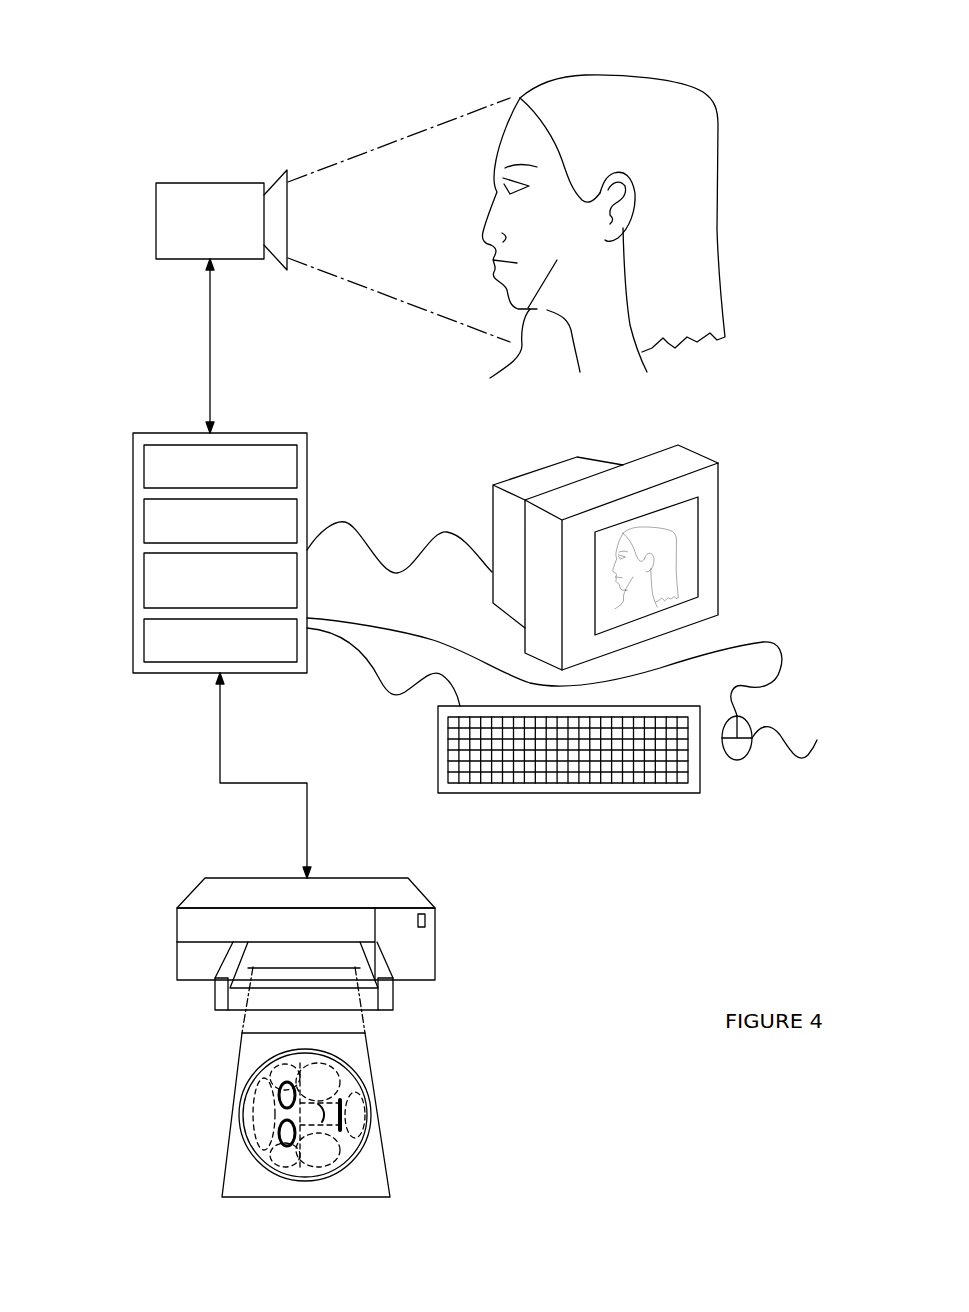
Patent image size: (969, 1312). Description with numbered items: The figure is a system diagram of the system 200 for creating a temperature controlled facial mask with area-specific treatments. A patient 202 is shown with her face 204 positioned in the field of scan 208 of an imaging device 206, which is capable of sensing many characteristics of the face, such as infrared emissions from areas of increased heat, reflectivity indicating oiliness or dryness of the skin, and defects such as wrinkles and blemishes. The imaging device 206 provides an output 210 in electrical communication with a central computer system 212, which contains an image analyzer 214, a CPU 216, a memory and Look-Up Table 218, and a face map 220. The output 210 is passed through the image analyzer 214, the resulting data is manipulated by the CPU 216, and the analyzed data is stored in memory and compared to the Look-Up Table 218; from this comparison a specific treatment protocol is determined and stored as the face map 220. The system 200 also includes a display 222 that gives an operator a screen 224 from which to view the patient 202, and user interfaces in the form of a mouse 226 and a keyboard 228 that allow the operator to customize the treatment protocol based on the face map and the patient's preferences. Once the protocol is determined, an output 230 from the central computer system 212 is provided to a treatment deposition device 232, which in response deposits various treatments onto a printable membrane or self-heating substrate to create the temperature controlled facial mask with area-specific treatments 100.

The temperature controlled facial mask with area-specific treatments 100 is at (395, 1156).
The system 200 is at (148, 142).
The patient 202 is at (657, 246).
The face 204 is at (520, 258).
The imaging device 206 is at (212, 183).
The field of scan 208 is at (375, 148).
The output 210 is at (210, 343).
The central computer system 212 is at (177, 495).
The image analyzer 214 is at (144, 473).
The CPU 216 is at (144, 520).
The memory and Look-Up Table 218 is at (144, 572).
The face map 220 is at (144, 638).
The display 222 is at (669, 557).
The screen 224 is at (683, 547).
The mouse 226 is at (583, 689).
The keyboard 228 is at (692, 787).
The output 230 is at (262, 785).
The treatment deposition device 232 is at (187, 923).